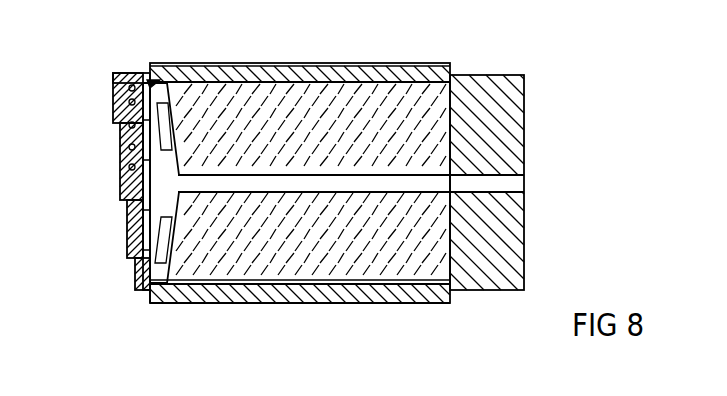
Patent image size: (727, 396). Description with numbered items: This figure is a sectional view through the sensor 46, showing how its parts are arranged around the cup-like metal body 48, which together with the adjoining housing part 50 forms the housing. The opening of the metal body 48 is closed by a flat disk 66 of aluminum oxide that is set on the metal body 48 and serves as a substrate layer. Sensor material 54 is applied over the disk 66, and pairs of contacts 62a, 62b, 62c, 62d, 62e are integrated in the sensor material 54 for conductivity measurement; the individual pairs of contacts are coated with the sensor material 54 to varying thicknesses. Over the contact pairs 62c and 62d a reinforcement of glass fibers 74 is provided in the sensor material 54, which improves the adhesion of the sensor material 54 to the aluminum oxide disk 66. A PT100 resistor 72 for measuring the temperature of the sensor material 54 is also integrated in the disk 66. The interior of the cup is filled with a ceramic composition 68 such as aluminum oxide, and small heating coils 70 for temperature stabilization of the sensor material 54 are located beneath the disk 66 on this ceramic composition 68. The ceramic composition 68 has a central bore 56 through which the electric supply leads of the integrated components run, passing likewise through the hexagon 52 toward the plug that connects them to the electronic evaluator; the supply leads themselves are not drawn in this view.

The mounting arrangement 46 is at (297, 310).
The cup-like metal body 48 is at (368, 307).
The housing part 50 is at (300, 342).
The hexagon 52 is at (487, 214).
The sensor material 54 is at (117, 73).
The central bore 56 is at (508, 184).
The pair of contacts 62a is at (147, 258).
The pair of contacts 62b is at (128, 220).
The pair of contacts 62c is at (133, 155).
The pair of contacts 62d is at (132, 70).
The pair of contacts 62e is at (118, 97).
The disk 66 is at (157, 293).
The ceramic composition 68 is at (242, 260).
The heating coils 70 is at (182, 87).
The PT100 resistor 72 is at (127, 190).
The glass fibers 74 is at (128, 150).